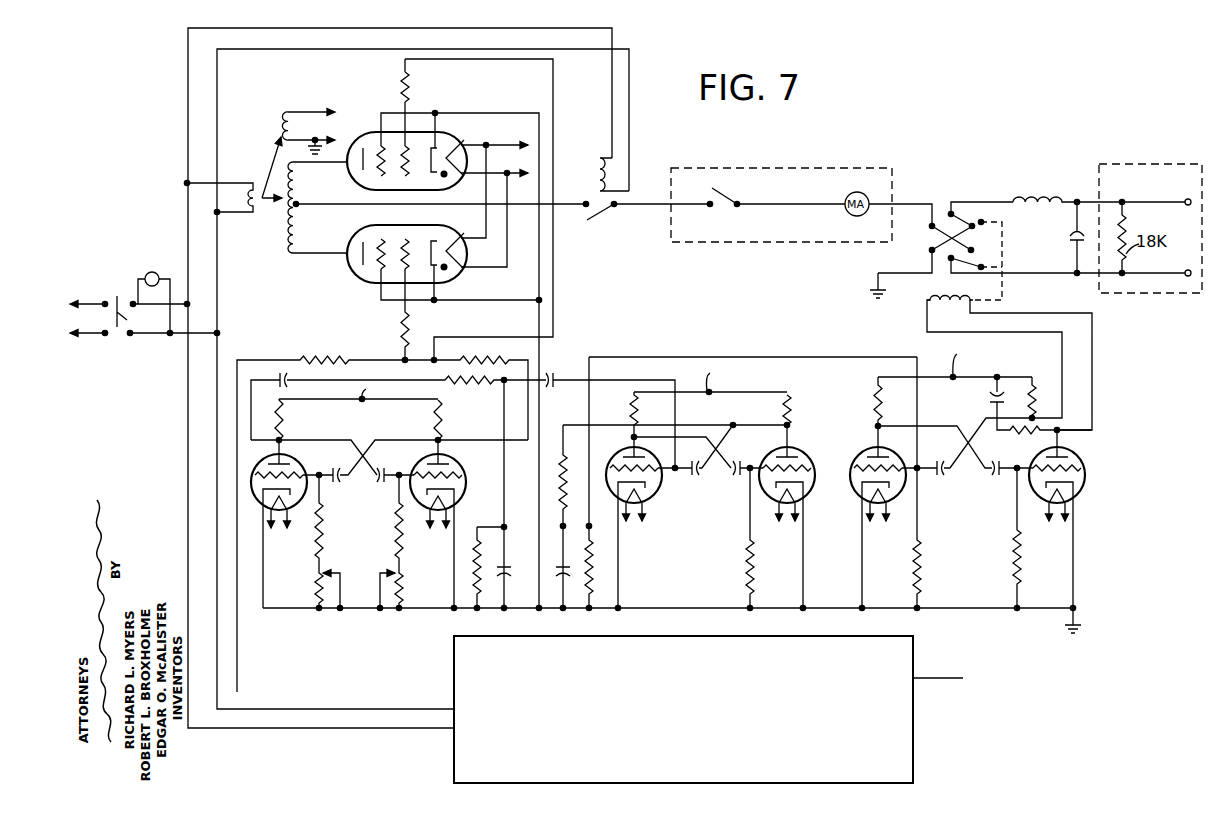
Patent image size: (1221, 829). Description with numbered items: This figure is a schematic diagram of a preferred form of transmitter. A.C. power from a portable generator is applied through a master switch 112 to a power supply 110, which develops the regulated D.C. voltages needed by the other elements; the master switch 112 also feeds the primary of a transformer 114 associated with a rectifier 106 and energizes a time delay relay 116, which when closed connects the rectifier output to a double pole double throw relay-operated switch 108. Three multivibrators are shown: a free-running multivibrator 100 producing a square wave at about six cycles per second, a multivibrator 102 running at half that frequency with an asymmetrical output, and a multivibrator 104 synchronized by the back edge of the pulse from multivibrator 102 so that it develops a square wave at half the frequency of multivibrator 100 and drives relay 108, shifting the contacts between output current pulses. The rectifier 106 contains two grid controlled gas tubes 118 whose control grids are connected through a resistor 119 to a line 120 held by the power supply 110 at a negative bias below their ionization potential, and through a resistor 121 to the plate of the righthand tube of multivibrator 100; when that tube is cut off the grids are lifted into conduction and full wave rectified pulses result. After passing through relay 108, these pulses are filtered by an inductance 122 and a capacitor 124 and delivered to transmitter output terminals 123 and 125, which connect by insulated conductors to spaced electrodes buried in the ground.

The multivibrator 100 is at (367, 423).
The multivibrator 102 is at (729, 415).
The multivibrator 104 is at (965, 408).
The rectifier 106 is at (426, 237).
The double pole double throw relay-operated switch 108 is at (941, 212).
The power supply 110 is at (454, 652).
The master switch 112 is at (115, 296).
The transformer 114 is at (258, 181).
The time delay relay 116 is at (596, 174).
The grid controlled gas tubes 118 is at (458, 138).
The resistor 119 is at (318, 353).
The line 120 is at (456, 507).
The resistor 121 is at (465, 360).
The inductance 122 is at (1030, 197).
The transmitter output terminal 123 is at (1188, 205).
The capacitor 124 is at (1074, 238).
The transmitter output terminal 125 is at (1186, 270).